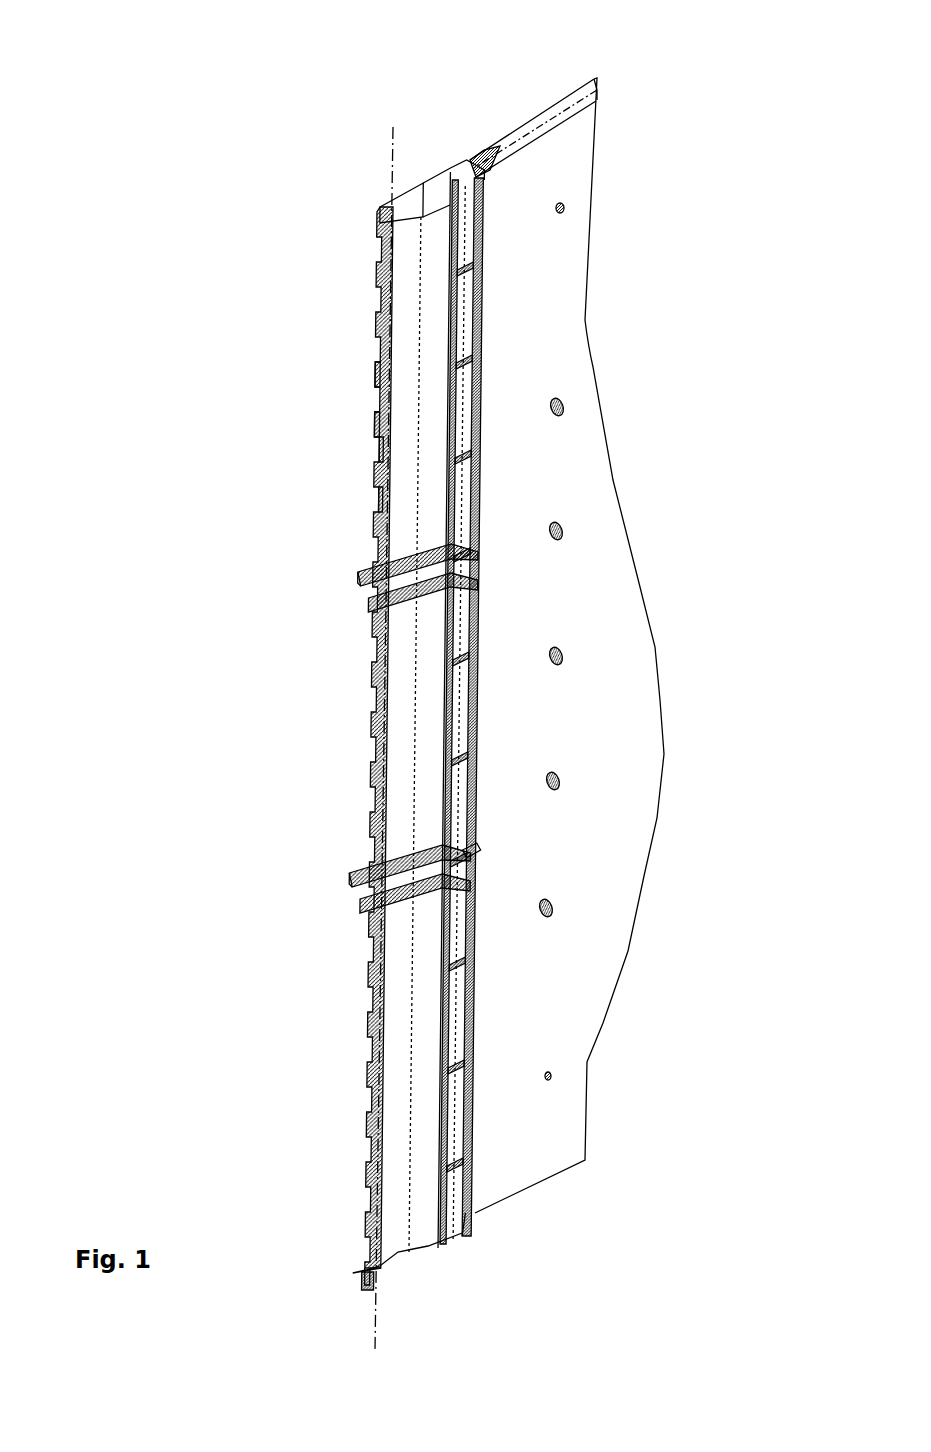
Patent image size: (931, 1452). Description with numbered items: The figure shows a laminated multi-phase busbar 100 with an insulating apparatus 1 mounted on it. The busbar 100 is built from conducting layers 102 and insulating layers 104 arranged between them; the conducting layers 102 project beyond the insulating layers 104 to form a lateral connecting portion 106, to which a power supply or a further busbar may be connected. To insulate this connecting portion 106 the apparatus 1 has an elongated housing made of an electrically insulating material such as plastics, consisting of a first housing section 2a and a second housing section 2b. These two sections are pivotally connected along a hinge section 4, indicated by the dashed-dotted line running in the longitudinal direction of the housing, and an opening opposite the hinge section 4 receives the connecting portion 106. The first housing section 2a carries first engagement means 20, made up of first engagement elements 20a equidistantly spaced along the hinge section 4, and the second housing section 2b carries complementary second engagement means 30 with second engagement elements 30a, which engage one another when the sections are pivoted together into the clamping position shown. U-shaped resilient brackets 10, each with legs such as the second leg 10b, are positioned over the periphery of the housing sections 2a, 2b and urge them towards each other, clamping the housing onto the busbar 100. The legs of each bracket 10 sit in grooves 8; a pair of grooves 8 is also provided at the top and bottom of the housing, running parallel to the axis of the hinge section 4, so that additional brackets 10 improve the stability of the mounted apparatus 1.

The apparatus 1 is at (372, 185).
The first housing section 2a is at (423, 183).
The second housing section 2b is at (423, 207).
The hinge section 4 is at (380, 1284).
The grooves 8 is at (480, 855).
The resilient bracket 10 is at (470, 160).
The second leg 10b is at (479, 202).
The first engagement means 20 is at (380, 418).
The first engagement elements 20a is at (377, 374).
The second engagement means 30 is at (381, 449).
The second engagement elements 30a is at (381, 499).
The laminated multi-phase busbar 100 is at (555, 354).
The conducting layers 102 is at (594, 78).
The insulating layers 104 is at (598, 88).
The lateral connecting portion 106 is at (490, 148).